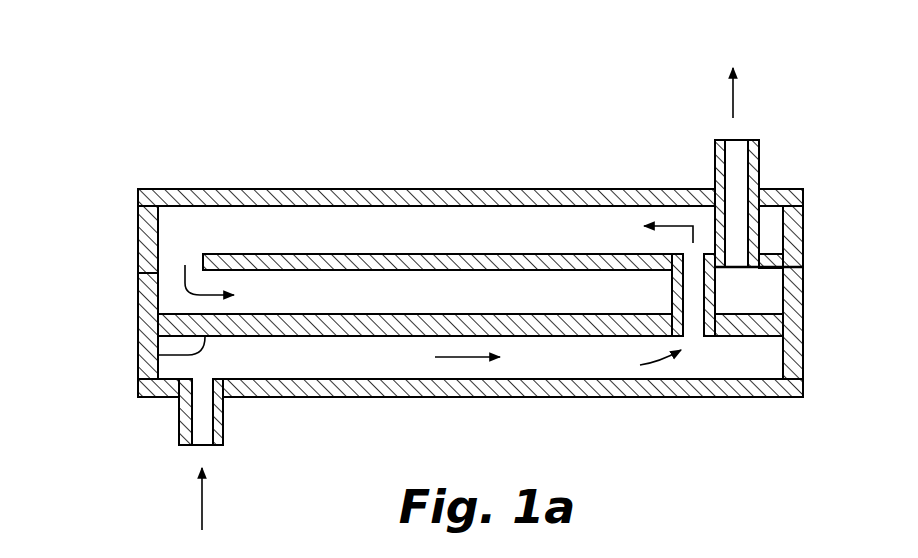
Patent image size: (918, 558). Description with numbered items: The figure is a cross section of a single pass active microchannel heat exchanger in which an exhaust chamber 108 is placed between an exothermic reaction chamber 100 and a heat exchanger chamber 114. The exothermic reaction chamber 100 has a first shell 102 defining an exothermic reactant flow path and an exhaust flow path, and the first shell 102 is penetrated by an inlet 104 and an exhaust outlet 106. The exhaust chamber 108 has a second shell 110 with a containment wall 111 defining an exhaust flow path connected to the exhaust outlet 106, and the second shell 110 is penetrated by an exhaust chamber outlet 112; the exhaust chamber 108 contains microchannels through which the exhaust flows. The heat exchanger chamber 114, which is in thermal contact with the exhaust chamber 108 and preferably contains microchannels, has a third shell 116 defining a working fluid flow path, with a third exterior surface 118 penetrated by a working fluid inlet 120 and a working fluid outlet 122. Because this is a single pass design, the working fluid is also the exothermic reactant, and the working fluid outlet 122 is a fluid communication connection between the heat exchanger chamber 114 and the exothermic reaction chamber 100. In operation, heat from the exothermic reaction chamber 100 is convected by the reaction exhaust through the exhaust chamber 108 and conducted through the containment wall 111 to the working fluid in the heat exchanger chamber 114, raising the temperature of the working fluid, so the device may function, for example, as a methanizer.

The exothermic reaction chamber 100 is at (411, 244).
The first shell 102 is at (401, 173).
The inlet 104 is at (670, 292).
The exhaust outlet 106 is at (182, 239).
The exhaust chamber 108 is at (411, 305).
The second shell 110 is at (114, 302).
The containment wall 111 is at (158, 356).
The exhaust chamber outlet 112 is at (759, 238).
The heat exchanger chamber 114 is at (548, 370).
The third shell 116 is at (120, 413).
The third exterior surface 118 is at (306, 397).
The working fluid inlet 120 is at (179, 430).
The working fluid outlet 122 is at (715, 293).